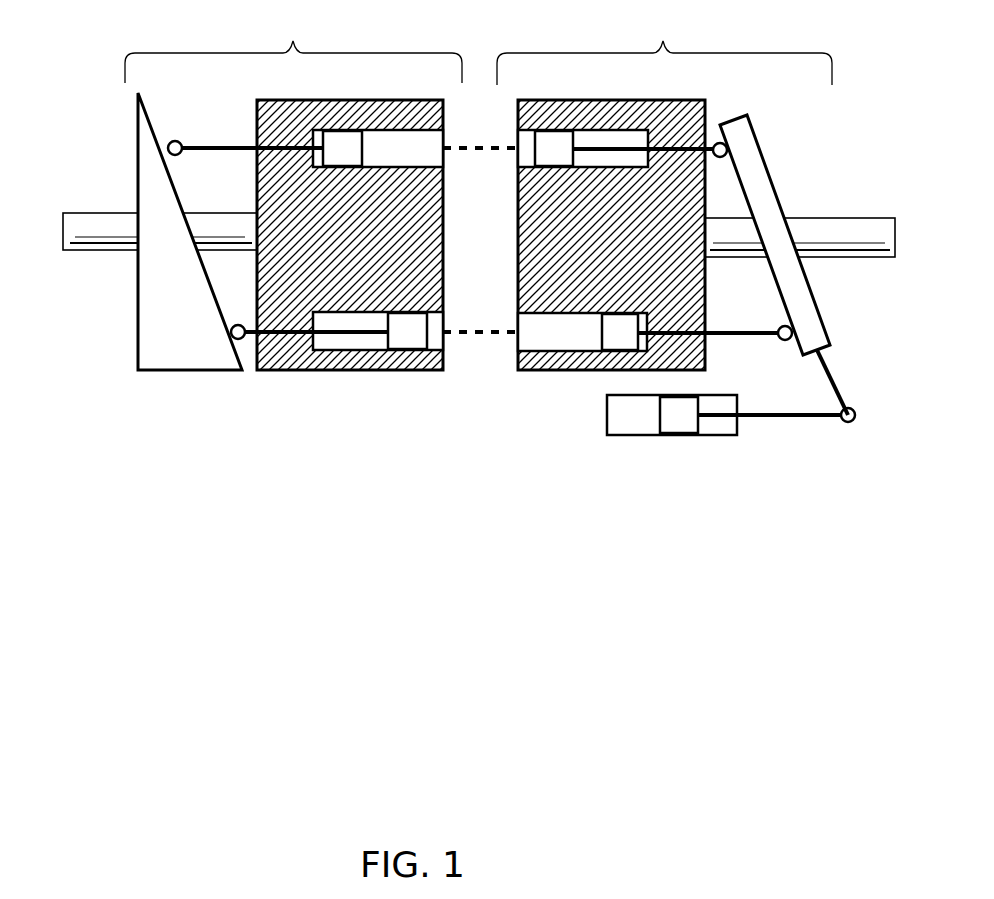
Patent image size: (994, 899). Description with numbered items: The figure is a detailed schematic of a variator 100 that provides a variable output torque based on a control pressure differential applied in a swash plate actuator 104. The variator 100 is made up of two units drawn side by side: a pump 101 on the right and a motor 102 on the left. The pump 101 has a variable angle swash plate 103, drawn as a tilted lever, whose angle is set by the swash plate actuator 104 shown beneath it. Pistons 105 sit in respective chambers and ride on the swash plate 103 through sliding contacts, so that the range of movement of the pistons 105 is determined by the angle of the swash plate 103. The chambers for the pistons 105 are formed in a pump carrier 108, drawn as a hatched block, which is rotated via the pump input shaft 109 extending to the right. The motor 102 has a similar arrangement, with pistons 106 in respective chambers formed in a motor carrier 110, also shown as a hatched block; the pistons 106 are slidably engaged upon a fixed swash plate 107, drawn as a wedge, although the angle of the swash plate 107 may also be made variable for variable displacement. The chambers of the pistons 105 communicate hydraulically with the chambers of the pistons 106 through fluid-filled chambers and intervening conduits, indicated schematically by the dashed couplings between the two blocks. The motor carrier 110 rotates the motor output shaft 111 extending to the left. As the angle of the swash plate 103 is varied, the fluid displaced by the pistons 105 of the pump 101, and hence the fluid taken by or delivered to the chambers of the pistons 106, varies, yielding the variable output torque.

The variator 100 is at (565, 578).
The pump 101 is at (664, 230).
The motor 102 is at (293, 229).
The variable angle swash plate 103 is at (798, 293).
The swash plate actuator 104 is at (688, 443).
The pistons 105 is at (560, 160).
The pistons 106 is at (355, 158).
The fixed swash plate 107 is at (198, 363).
The pump carrier 108 is at (550, 363).
The pump input shaft 109 is at (863, 232).
The motor carrier 110 is at (400, 362).
The motor output shaft 111 is at (77, 222).